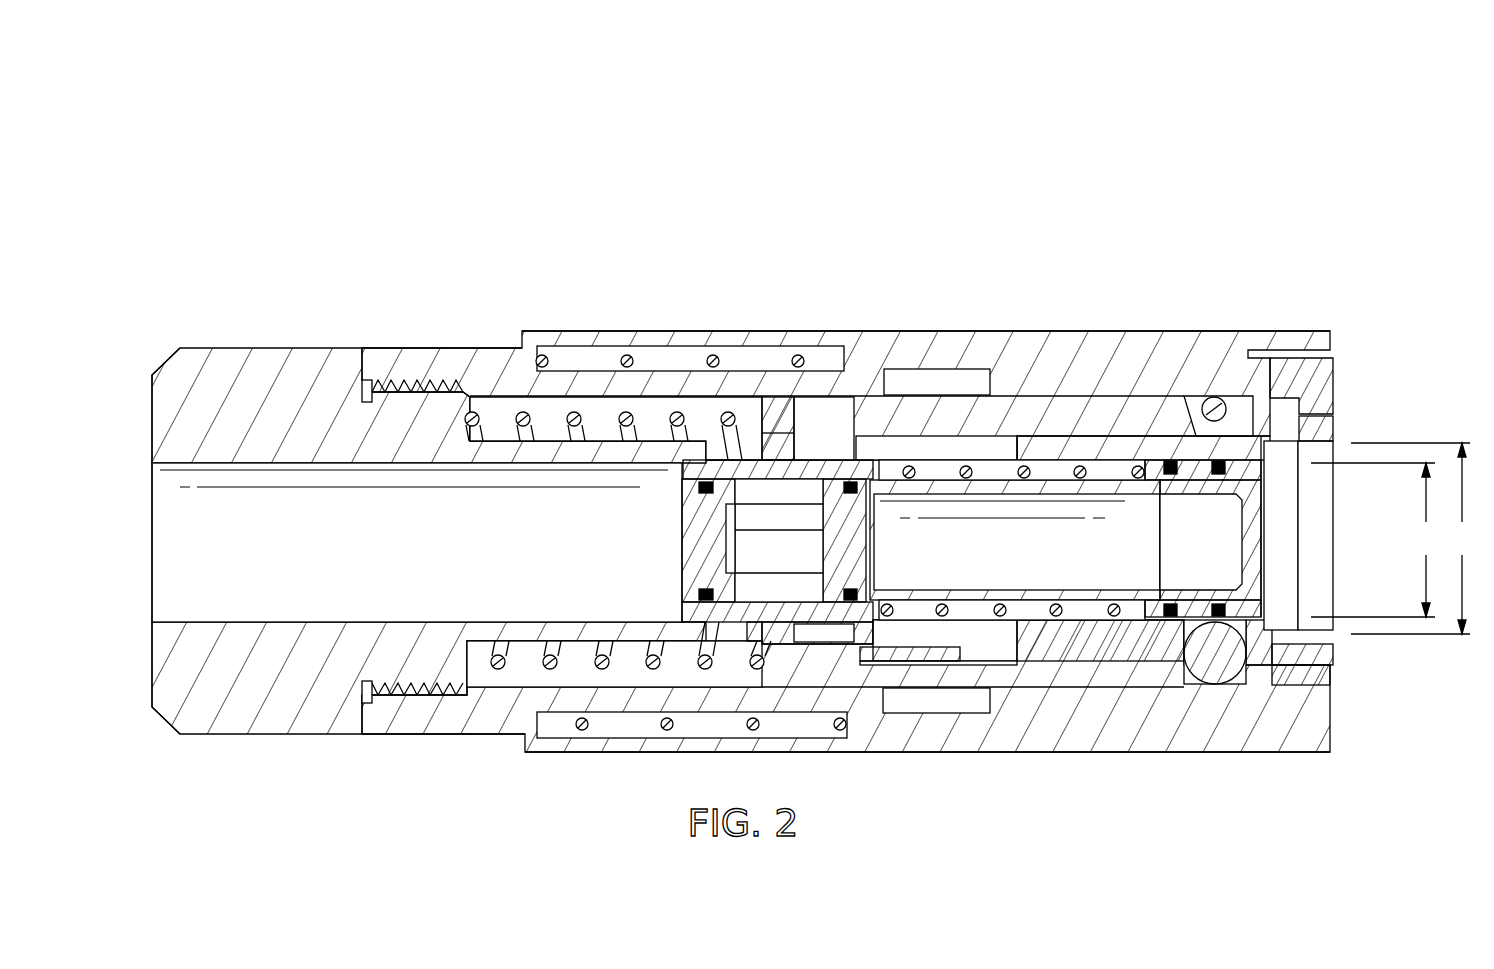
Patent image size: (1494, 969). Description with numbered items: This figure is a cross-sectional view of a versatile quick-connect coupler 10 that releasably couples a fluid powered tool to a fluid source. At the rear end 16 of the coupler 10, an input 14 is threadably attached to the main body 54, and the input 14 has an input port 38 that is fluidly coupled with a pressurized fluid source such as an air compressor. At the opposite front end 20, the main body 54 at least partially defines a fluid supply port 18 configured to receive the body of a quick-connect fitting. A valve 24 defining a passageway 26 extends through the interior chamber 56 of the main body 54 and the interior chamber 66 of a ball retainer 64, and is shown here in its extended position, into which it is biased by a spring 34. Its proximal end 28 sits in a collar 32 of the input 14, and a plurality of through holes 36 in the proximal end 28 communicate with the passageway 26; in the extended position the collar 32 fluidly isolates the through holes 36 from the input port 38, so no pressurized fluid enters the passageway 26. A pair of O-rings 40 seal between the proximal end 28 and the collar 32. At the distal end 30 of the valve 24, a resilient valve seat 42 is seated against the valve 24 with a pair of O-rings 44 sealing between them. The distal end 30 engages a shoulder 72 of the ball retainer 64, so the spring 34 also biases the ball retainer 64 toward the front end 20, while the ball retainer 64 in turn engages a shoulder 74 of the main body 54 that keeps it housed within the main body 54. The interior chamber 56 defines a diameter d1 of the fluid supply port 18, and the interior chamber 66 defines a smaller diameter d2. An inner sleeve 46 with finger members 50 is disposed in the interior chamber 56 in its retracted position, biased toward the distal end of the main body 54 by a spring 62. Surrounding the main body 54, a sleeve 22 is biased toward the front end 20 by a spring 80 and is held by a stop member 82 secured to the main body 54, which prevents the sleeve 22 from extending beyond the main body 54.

The quick-connect coupler 10 is at (661, 231).
The input 14 is at (274, 356).
The rear end 16 is at (145, 340).
The fluid supply port 18 is at (1311, 538).
The front end 20 is at (1364, 321).
The sleeve 22 is at (1229, 741).
The valve 24 is at (1050, 594).
The passageway 26 is at (901, 556).
The proximal end 28 is at (806, 583).
The distal end 30 is at (1178, 511).
The collar 32 is at (815, 460).
The spring 34 is at (993, 619).
The through holes 36 is at (767, 556).
The input port 38 is at (183, 553).
The O-rings 40 is at (700, 490).
The valve seat 42 is at (1278, 552).
The O-rings 44 is at (1166, 599).
The inner sleeve 46 is at (920, 696).
The finger members 50 is at (1130, 677).
The main body 54 is at (445, 357).
The interior chamber 56 is at (590, 410).
The spring 62 is at (496, 672).
The ball retainer 64 is at (1086, 452).
The interior chamber 66 is at (1112, 473).
The shoulder 72 is at (1261, 442).
The shoulder 74 is at (1309, 433).
The spring 80 is at (573, 724).
The stop member 82 is at (1334, 386).
The diameter d1 is at (1414, 538).
The diameter d2 is at (1376, 540).